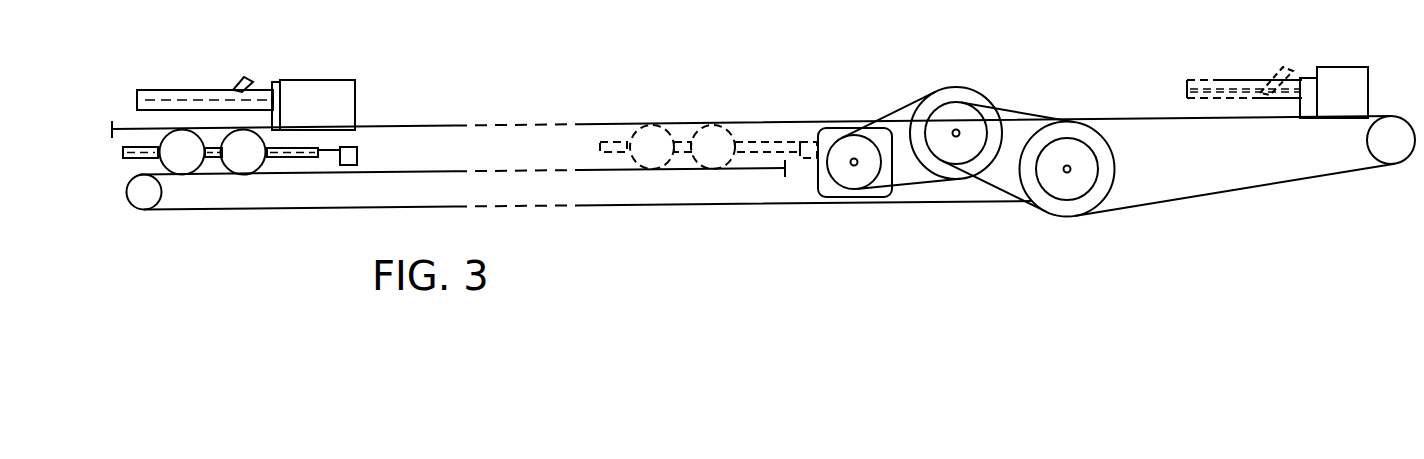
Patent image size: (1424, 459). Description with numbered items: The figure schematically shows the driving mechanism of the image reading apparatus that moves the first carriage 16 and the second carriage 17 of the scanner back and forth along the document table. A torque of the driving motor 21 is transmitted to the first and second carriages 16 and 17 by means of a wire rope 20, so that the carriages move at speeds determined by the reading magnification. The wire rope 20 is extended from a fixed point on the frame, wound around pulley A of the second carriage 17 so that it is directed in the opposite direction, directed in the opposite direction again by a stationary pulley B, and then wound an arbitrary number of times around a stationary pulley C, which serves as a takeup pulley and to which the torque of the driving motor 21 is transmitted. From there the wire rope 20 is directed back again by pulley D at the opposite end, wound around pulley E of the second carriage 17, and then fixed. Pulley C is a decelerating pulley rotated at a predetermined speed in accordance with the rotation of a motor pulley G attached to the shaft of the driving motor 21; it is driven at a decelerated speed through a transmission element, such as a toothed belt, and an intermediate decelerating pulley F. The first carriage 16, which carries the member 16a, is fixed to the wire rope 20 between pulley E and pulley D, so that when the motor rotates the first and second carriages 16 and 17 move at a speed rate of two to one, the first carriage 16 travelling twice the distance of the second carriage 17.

The first carriage 16 is at (278, 82).
The guide plate 16a is at (243, 78).
The second carriage 17 is at (358, 153).
The wire rope 20 is at (698, 205).
The driving motor 21 is at (875, 198).
The pulley A is at (190, 167).
The stationary pulley B is at (148, 200).
The stationary pulley C is at (1068, 192).
The pulley D is at (1393, 153).
The pulley E is at (253, 163).
The intermediate decelerating pulley F is at (983, 87).
The motor pulley G is at (842, 180).